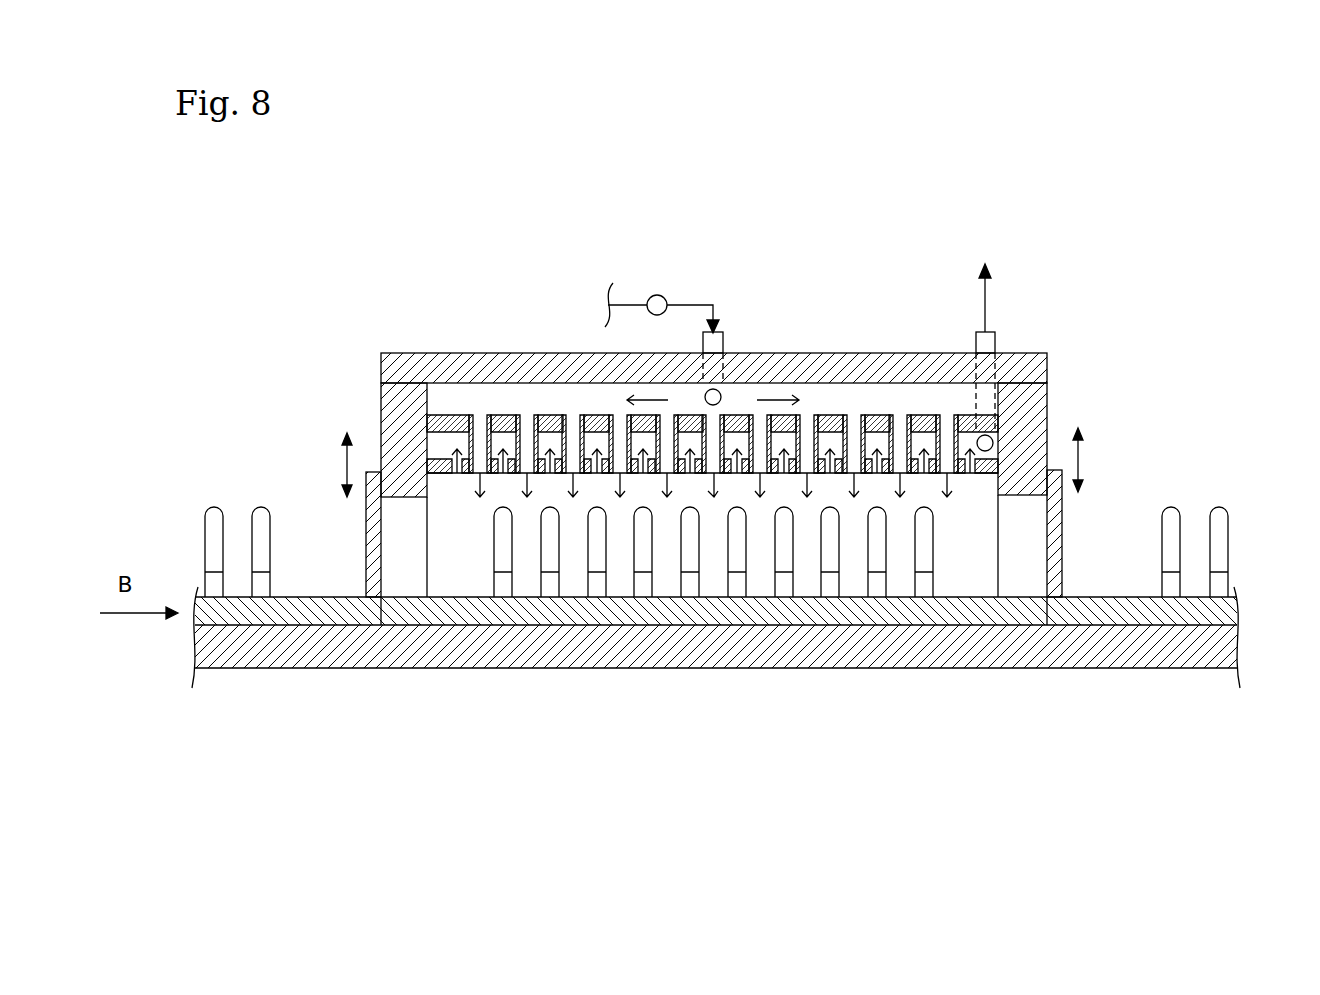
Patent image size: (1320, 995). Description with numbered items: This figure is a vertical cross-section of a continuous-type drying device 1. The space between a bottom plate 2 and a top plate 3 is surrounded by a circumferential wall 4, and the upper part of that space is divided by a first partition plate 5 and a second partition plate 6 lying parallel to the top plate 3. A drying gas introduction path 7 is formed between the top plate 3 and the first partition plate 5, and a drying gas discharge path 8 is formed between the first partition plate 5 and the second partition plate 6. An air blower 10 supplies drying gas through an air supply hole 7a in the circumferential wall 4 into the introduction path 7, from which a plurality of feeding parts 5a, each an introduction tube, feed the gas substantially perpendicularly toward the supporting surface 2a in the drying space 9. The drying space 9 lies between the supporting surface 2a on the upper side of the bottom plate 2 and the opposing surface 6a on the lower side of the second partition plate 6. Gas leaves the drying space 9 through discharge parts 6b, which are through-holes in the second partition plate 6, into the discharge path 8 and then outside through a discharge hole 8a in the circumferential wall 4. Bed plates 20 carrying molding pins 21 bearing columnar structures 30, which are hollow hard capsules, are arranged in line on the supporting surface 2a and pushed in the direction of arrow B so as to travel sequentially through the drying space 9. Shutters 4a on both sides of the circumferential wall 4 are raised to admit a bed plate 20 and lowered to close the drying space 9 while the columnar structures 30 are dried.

The drying device 1 is at (884, 283).
The bottom plate 2 is at (902, 648).
The supporting surface 2a is at (458, 620).
The top plate 3 is at (806, 366).
The circumferential wall 4 is at (1046, 409).
The shutter 4a is at (372, 541).
The first partition plate 5 is at (458, 425).
The feeding part 5a is at (492, 440).
The second partition plate 6 is at (445, 462).
The opposing surface 6a is at (446, 470).
The discharge part 6b is at (513, 460).
The drying gas introduction path 7 is at (930, 400).
The air supply hole 7a is at (722, 392).
The drying gas discharge path 8 is at (877, 440).
The discharge hole 8a is at (993, 437).
The drying space 9 is at (978, 523).
The air blower 10 is at (657, 295).
The bed plate 20 is at (312, 612).
The molding pin 21 is at (210, 584).
The columnar structure 30 is at (210, 516).